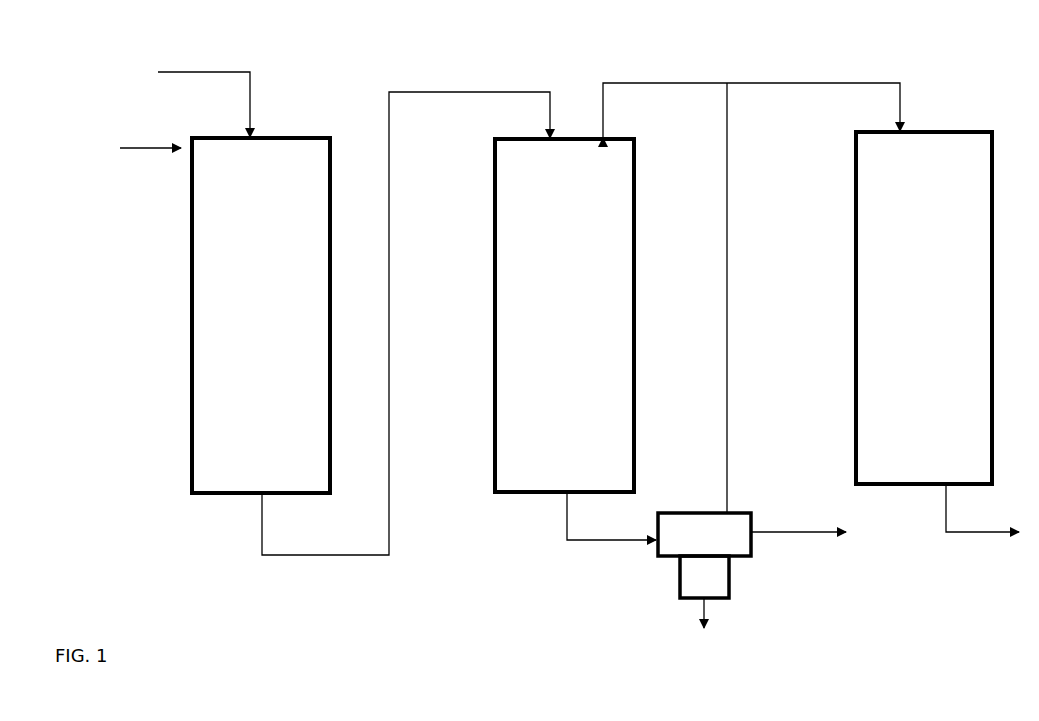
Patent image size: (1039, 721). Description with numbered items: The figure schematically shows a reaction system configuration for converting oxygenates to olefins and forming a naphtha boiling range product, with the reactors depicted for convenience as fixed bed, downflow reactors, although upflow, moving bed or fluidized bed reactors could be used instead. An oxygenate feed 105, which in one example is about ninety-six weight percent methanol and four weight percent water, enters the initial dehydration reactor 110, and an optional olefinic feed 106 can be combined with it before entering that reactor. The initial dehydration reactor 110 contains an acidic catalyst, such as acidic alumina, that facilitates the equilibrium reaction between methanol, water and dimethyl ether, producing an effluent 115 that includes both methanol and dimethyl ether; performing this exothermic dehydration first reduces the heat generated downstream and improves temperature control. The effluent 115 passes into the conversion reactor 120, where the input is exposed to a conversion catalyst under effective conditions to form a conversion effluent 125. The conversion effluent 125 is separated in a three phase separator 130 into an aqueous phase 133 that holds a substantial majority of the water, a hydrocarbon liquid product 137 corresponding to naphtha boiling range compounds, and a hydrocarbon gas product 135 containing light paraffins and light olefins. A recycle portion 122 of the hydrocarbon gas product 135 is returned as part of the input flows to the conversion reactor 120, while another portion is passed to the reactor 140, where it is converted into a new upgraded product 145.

The oxygenate feed 105 is at (263, 102).
The olefinic feed 106 is at (127, 168).
The initial dehydration reactor 110 is at (261, 315).
The effluent 115 is at (255, 568).
The conversion reactor 120 is at (564, 315).
The recycle portion 122 is at (625, 72).
The conversion effluent 125 is at (548, 528).
The three phase separator 130 is at (695, 490).
The aqueous phase 133 is at (715, 617).
The hydrocarbon gas product 135 is at (713, 193).
The hydrocarbon liquid product 137 is at (805, 547).
The reactor 140 is at (924, 308).
The upgraded product 145 is at (945, 555).